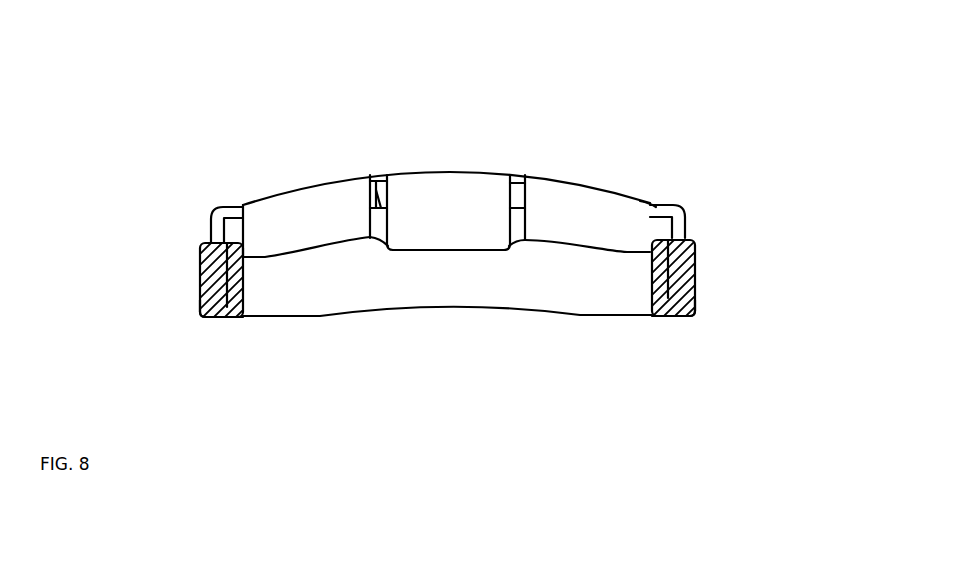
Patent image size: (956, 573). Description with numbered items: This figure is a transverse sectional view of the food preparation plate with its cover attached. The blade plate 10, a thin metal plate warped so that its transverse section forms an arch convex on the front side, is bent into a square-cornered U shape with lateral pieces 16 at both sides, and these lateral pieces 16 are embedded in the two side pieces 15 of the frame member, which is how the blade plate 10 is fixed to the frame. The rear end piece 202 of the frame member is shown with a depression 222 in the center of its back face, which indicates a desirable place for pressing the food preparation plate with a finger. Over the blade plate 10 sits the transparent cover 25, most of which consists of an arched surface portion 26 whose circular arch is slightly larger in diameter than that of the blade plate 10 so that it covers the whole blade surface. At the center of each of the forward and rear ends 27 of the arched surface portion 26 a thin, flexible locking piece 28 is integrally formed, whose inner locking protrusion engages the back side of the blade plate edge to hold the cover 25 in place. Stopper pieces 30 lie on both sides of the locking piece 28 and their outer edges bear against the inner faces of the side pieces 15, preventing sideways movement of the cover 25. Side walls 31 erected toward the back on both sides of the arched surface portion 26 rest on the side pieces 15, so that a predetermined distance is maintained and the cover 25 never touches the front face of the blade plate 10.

The blade plate 10 is at (377, 180).
The side pieces 15 is at (207, 306).
The lateral pieces 16 is at (203, 267).
The cover 25 is at (462, 174).
The arched surface portion 26 is at (520, 178).
The forward and rear ends 27 is at (657, 207).
The locking piece 28 is at (478, 205).
The stopper pieces 30 is at (295, 218).
The side walls 31 is at (212, 231).
The rear end piece 202 is at (333, 293).
The depression 222 is at (447, 310).